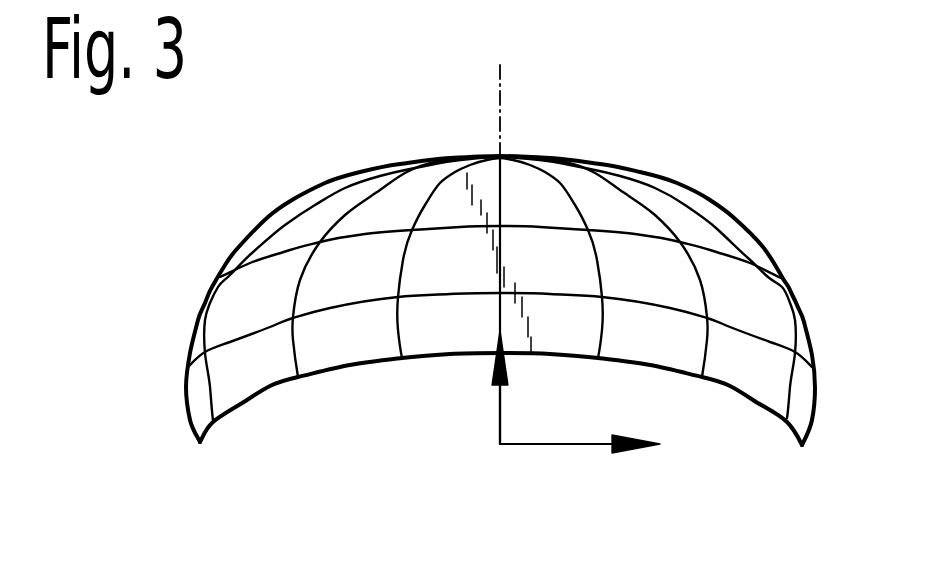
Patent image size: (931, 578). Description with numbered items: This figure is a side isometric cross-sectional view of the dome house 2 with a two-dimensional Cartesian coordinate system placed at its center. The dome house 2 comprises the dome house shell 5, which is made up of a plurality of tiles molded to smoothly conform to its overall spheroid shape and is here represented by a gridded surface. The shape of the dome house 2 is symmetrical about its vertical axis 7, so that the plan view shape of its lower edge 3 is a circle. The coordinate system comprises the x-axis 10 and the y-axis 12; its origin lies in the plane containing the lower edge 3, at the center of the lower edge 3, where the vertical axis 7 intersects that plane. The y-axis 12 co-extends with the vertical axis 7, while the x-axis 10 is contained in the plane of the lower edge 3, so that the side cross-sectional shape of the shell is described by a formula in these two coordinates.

The dome house 2 is at (752, 89).
The lower edge 3 is at (263, 393).
The dome house shell 5 is at (232, 320).
The vertical axis 7 is at (500, 108).
The x-axis 10 is at (550, 444).
The y-axis 12 is at (500, 400).